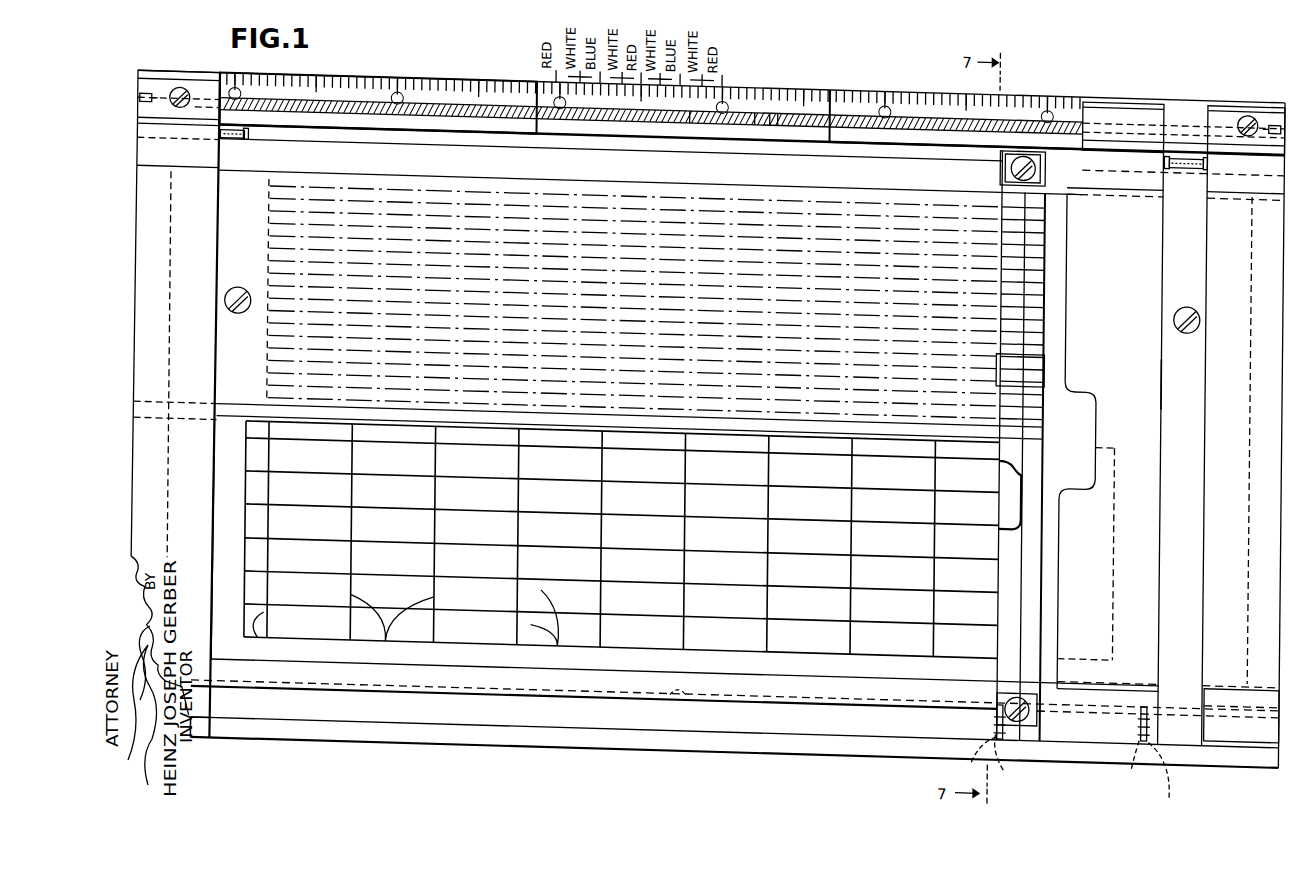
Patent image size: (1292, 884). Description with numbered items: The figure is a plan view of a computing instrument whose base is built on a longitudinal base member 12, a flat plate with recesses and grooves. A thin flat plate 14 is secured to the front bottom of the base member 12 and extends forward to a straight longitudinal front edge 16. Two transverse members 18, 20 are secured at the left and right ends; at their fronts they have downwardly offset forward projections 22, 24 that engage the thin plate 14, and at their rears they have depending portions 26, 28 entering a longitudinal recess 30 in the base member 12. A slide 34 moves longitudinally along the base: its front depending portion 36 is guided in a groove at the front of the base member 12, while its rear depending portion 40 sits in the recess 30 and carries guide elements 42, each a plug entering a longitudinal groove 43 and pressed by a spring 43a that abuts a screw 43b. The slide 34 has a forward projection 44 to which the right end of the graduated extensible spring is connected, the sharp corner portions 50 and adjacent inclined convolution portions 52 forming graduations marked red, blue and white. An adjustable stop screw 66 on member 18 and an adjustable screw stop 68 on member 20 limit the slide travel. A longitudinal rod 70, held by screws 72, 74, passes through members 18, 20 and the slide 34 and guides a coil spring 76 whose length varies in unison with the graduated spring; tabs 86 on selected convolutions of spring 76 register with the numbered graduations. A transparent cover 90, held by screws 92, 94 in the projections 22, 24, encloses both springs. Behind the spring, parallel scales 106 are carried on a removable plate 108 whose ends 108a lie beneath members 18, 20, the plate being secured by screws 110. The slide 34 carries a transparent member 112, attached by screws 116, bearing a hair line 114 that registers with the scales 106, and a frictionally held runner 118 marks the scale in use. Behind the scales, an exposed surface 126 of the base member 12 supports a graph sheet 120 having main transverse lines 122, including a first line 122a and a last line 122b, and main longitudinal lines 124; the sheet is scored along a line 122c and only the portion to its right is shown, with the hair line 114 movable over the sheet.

The longitudinal base member 12 is at (515, 726).
The thin flat plate 14 is at (545, 70).
The straight longitudinal front edge 16 is at (828, 66).
The transverse member 18 is at (142, 242).
The transverse member 20 is at (1218, 219).
The forward projection 22 is at (147, 78).
The forward projection 24 is at (1224, 81).
The depending portion 26 is at (212, 724).
The depending portion 28 is at (1237, 700).
The longitudinal recess 30 is at (740, 714).
The slide 34 is at (1153, 357).
The depending portion 36 is at (1120, 110).
The depending portion 40 is at (1093, 714).
The guide element 42 is at (996, 686).
The longitudinal groove 43 is at (691, 682).
The spring 43a is at (1083, 761).
The screw 43b is at (1077, 770).
The forward projection 44 is at (1098, 80).
The corner portion 50 is at (762, 75).
The inclined convolution portion 52 is at (778, 73).
The adjustable stop screw 66 is at (238, 136).
The adjustable screw stop 68 is at (1186, 139).
The longitudinal rod 70 is at (770, 103).
The screw 72 is at (141, 88).
The screw 74 is at (1278, 68).
The coil spring 76 is at (690, 103).
The tab 86 is at (400, 83).
The front top shield or cover 90 is at (350, 82).
The screw 92 is at (186, 93).
The screw 94 is at (1248, 83).
The scales 106 is at (878, 208).
The plate 108 is at (726, 167).
The plate end 108a is at (172, 325).
The screw 110 is at (240, 284).
The transparent member 112 is at (1044, 484).
The hair line 114 is at (1049, 274).
The screw 116 is at (1006, 143).
The runner 118 is at (1047, 405).
The graph sheet 120 is at (837, 638).
The main transverse line 122 is at (391, 631).
The first transverse line 122a is at (262, 622).
The last transverse line 122b is at (1025, 487).
The scored line 122c is at (215, 541).
The main longitudinal line 124 is at (563, 634).
The upwardly facing surface 126 is at (625, 653).